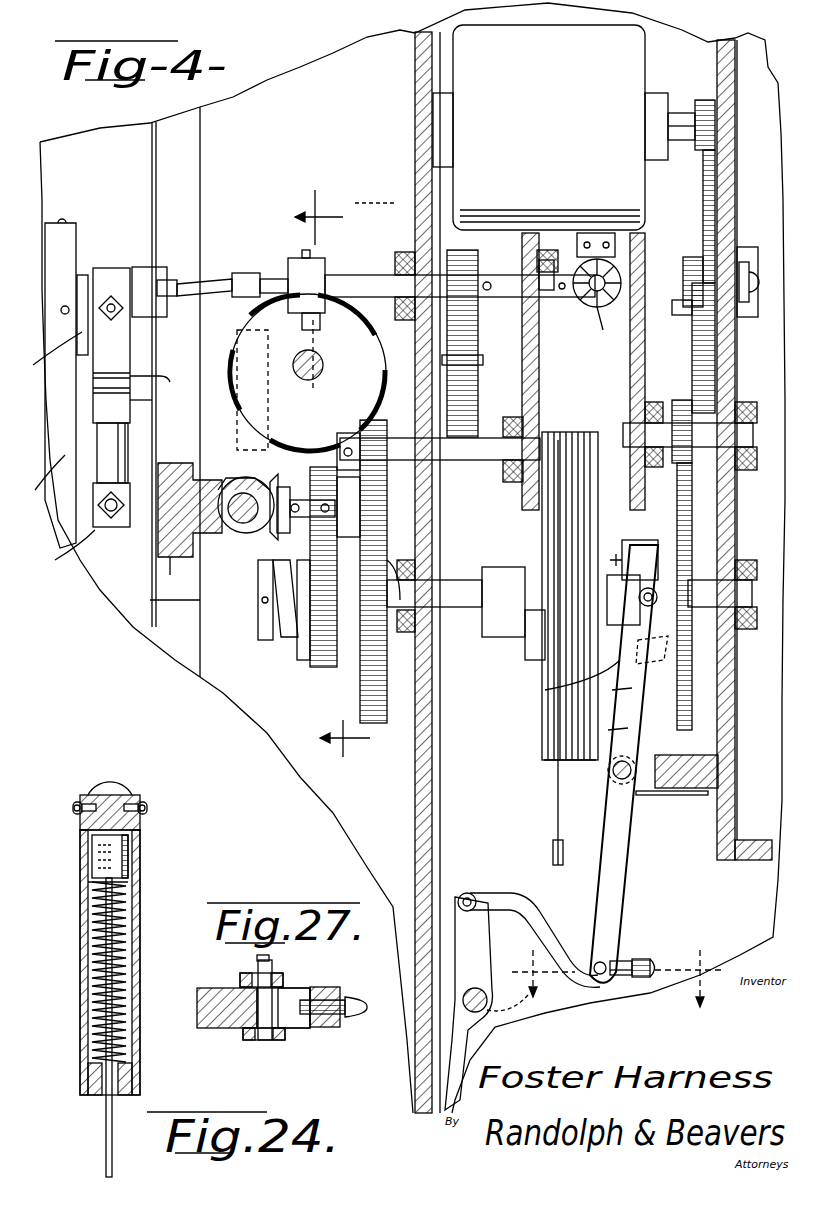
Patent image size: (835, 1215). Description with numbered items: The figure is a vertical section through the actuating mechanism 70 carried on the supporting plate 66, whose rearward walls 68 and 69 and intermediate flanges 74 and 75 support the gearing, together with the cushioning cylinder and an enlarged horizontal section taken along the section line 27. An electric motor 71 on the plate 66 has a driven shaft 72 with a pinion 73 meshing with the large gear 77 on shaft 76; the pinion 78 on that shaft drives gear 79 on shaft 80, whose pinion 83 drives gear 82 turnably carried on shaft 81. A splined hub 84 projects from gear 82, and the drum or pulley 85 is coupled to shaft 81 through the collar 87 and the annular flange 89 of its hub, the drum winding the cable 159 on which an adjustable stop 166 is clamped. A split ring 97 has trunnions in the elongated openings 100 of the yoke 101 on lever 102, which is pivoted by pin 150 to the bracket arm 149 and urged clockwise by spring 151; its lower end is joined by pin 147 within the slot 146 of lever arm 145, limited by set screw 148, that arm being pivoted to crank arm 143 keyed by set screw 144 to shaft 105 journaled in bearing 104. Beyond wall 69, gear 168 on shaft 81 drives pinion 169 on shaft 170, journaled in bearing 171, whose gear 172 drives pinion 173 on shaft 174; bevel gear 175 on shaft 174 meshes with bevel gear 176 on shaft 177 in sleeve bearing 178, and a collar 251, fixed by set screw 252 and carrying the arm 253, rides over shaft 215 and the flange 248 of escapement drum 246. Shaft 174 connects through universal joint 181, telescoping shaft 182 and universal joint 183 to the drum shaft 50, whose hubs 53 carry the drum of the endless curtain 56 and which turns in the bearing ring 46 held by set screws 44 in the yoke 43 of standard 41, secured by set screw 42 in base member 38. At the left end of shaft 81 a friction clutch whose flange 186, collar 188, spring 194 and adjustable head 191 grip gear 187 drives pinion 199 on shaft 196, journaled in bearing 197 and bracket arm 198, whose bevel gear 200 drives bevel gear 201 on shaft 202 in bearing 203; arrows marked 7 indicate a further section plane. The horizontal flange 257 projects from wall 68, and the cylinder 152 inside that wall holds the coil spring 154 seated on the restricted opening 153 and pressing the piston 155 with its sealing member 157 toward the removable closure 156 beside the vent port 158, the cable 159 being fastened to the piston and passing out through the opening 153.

In FIG. 4, the supporting plate 66 is at (412, 558).
In FIG. 4, the wall or flange 69 is at (415, 158).
In FIG. 4, the wall or flange 68 is at (735, 145).
In FIG. 4, the electric motor 71 is at (539, 127).
In FIG. 4, the driven shaft 72 is at (678, 110).
In FIG. 4, the pinion 73 is at (712, 105).
In FIG. 4, the gear 77 is at (703, 185).
In FIG. 4, the shaft 76 is at (678, 270).
In FIG. 4, the gear 79 is at (692, 356).
In FIG. 4, the pinion 78 is at (677, 312).
In FIG. 4, the shaft 174 is at (340, 280).
In FIG. 4, the pinion 173 is at (465, 250).
In FIG. 4, the gear 172 is at (478, 362).
In FIG. 4, the beveled gear 176 is at (582, 265).
In FIG. 4, the sleeve bearing 178 is at (600, 233).
In FIG. 4, the shaft 177 is at (602, 331).
In FIG. 4, the beveled gear 175 is at (558, 323).
In FIG. 4, the flange 74 is at (630, 358).
In FIG. 4, the flange 75 is at (540, 408).
In FIG. 4, the shaft 170 is at (440, 448).
In FIG. 4, the shaft 80 is at (720, 435).
In FIG. 4, the pinion 83 is at (678, 400).
In FIG. 4, the gear 82 is at (677, 715).
In FIG. 4, the actuating mechanism 70 is at (710, 540).
In FIG. 4, the adjustable stop 166 is at (545, 565).
In FIG. 4, the flexible member or cable 159 is at (555, 815).
In FIG. 24, the flexible member or cable 159 is at (112, 1165).
In FIG. 4, the drum or pulley 85 is at (542, 712).
In FIG. 4, the shaft 81 is at (569, 596).
In FIG. 4, the collar 87 is at (505, 640).
In FIG. 4, the annular flange 89 is at (525, 660).
In FIG. 4, the yoke 101 is at (559, 680).
In FIG. 4, the splined hub 84 is at (618, 560).
In FIG. 4, the split ring 97 is at (650, 585).
In FIG. 4, the lever 102 is at (620, 880).
In FIG. 27, the lever 102 is at (250, 1040).
In FIG. 4, the openings 100 is at (660, 667).
In FIG. 4, the pivot pin 150 is at (612, 780).
In FIG. 4, the bracket arm 149 is at (680, 755).
In FIG. 4, the spring 151 is at (655, 800).
In FIG. 4, the lever arm 145 is at (518, 893).
In FIG. 27, the lever arm 145 is at (208, 1030).
In FIG. 4, the crank arm 143 is at (470, 893).
In FIG. 4, the set screw 144 is at (488, 1005).
In FIG. 4, the shaft 105 is at (521, 1027).
In FIG. 4, the pin 147 is at (603, 990).
In FIG. 27, the pin 147 is at (268, 1040).
In FIG. 4, the set screw 148 is at (650, 980).
In FIG. 27, the set screw 148 is at (360, 1020).
In FIG. 4, the longitudinal slot 146 is at (618, 965).
In FIG. 27, the longitudinal slot 146 is at (285, 995).
In FIG. 4, the section line 7 is at (339, 473).
In FIG. 4, the section line 27— 27 is at (617, 965).
In FIG. 4, the collar 251 is at (200, 425).
In FIG. 4, the bevel gear 201 is at (250, 490).
In FIG. 4, the shaft 215 is at (318, 355).
In FIG. 4, the escapement collar or drum 246 is at (272, 390).
In FIG. 4, the bearing 171 is at (345, 420).
In FIG. 4, the set screw 252 is at (304, 258).
In FIG. 4, the arm or extension 253 is at (300, 322).
In FIG. 4, the universal joint 181 is at (265, 278).
In FIG. 4, the splined telescoping shaft 182 is at (208, 280).
In FIG. 4, the universal joint 183 is at (165, 267).
In FIG. 4, the bearing ring or sleeve 46 is at (102, 267).
In FIG. 4, the shaft 50 is at (137, 300).
In FIG. 4, the set screws and lock nuts 44 is at (125, 320).
In FIG. 4, the yoke or fork 43 is at (156, 392).
In FIG. 4, the standard 41 is at (105, 440).
In FIG. 4, the set screw and lock nut 42 is at (100, 510).
In FIG. 4, the hubs 53 is at (48, 364).
In FIG. 4, the endless curtain or strip 56 is at (42, 483).
In FIG. 4, the base member 38 is at (57, 558).
In FIG. 4, the annular flange 248 is at (162, 427).
In FIG. 4, the bracket arm 198 is at (165, 575).
In FIG. 4, the bevel gear 200 is at (243, 525).
In FIG. 4, the bearing 203 is at (200, 560).
In FIG. 4, the pinion 199 is at (289, 515).
In FIG. 4, the shaft 196 is at (295, 495).
In FIG. 4, the gear 187 is at (318, 667).
In FIG. 4, the bearing 197 is at (360, 520).
In FIG. 4, the annular flange 186 is at (360, 700).
In FIG. 4, the pinion 169 is at (365, 432).
In FIG. 4, the gear 168 is at (395, 725).
In FIG. 4, the shaft 202 is at (278, 590).
In FIG. 4, the head or disk 191 is at (266, 640).
In FIG. 4, the spring 194 is at (303, 655).
In FIG. 4, the collar 188 is at (222, 693).
In FIG. 4, the bearing 104 is at (415, 968).
In FIG. 4, the horizontal wall or flange 257 is at (750, 862).
In FIG. 24, the removable closure 156 is at (104, 790).
In FIG. 24, the sealing member 157 is at (82, 831).
In FIG. 24, the vent port 158 is at (140, 818).
In FIG. 24, the piston 155 is at (130, 845).
In FIG. 24, the cylinder or tube 152 is at (140, 905).
In FIG. 24, the expansion coil spring 154 is at (90, 970).
In FIG. 24, the restricted opening 153 is at (98, 1090).